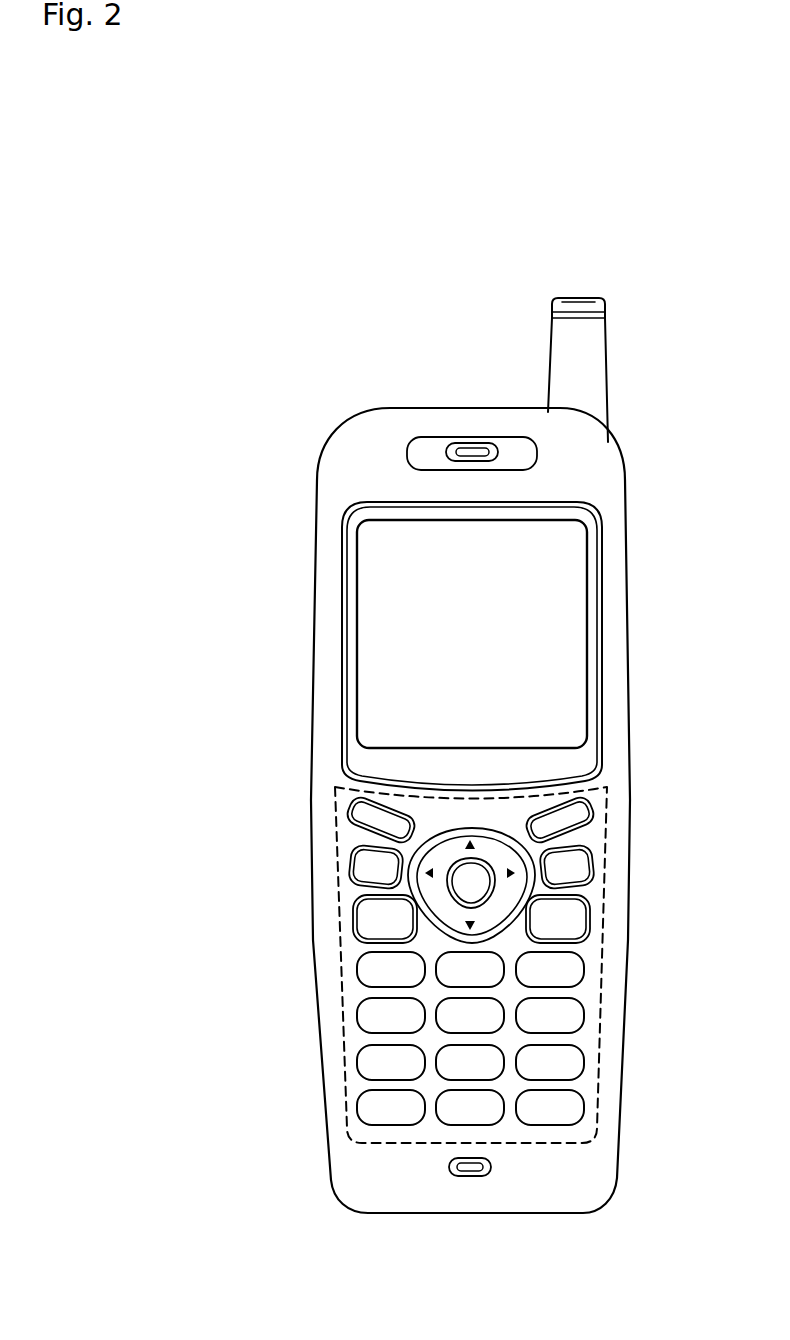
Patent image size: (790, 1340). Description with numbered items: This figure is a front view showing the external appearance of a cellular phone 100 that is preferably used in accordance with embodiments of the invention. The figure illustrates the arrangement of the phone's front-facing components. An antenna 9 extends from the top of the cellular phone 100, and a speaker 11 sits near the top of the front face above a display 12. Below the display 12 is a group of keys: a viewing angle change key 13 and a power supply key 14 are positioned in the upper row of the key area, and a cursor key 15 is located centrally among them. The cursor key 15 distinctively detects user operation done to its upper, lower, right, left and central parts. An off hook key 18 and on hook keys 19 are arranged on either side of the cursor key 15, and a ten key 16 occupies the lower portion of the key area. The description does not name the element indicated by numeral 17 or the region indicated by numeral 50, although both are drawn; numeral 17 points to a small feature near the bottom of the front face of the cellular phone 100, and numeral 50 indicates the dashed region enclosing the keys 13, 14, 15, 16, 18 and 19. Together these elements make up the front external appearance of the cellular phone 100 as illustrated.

The antenna 9 is at (607, 314).
The speaker 11 is at (447, 447).
The display 12 is at (603, 625).
The viewing angle change key 13 is at (587, 810).
The power supply key 14 is at (352, 805).
The cursor key 15 is at (500, 897).
The ten key 16 is at (360, 972).
The microphone 17 is at (468, 1177).
The off hook key 18 is at (590, 935).
The on hook key 19 is at (358, 918).
The keypad 50 is at (335, 862).
The cellular phone 100 is at (584, 1195).